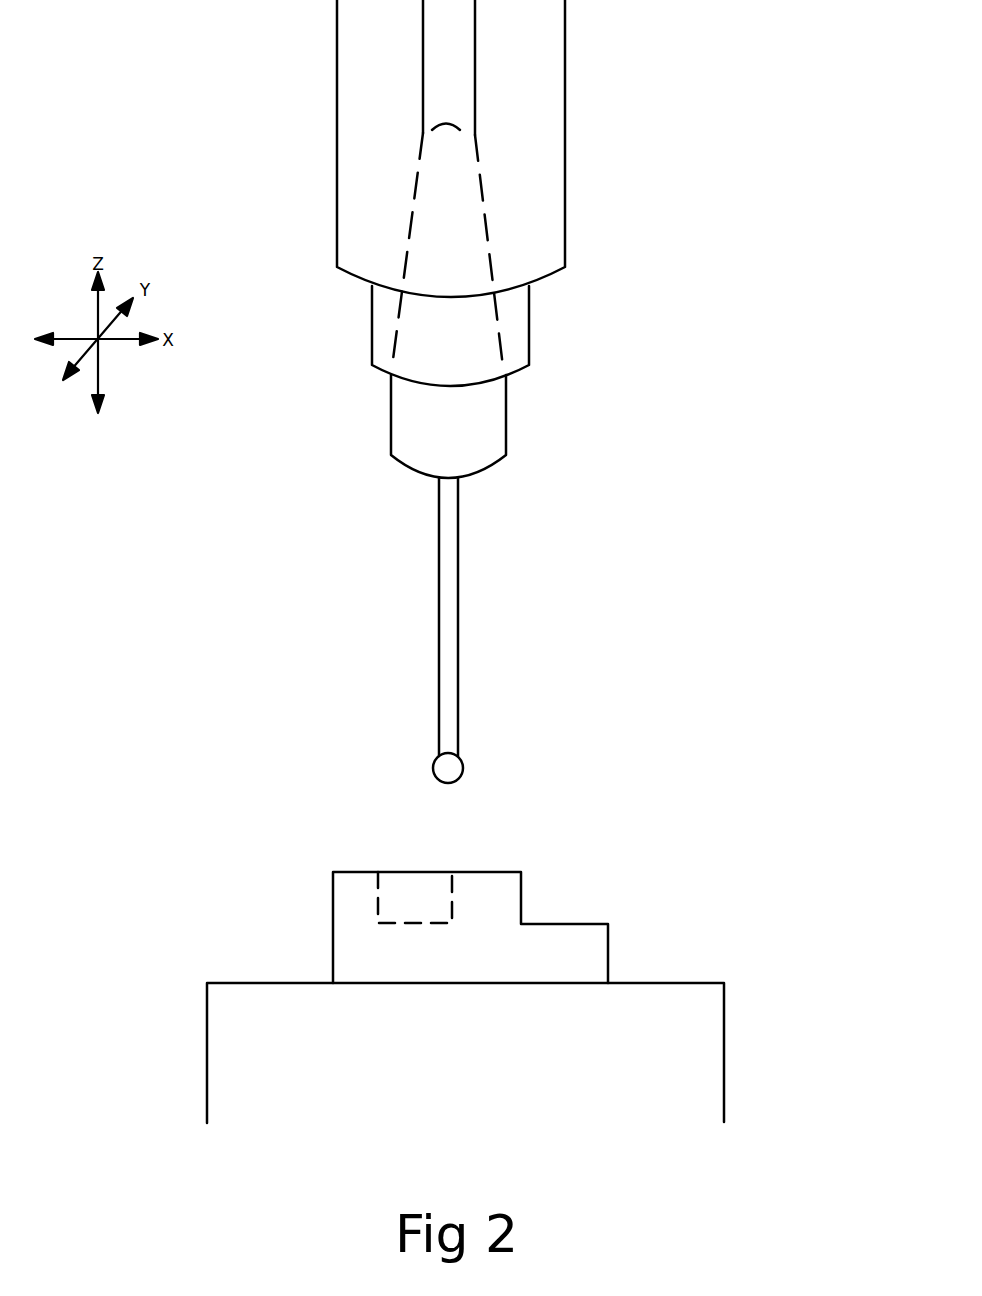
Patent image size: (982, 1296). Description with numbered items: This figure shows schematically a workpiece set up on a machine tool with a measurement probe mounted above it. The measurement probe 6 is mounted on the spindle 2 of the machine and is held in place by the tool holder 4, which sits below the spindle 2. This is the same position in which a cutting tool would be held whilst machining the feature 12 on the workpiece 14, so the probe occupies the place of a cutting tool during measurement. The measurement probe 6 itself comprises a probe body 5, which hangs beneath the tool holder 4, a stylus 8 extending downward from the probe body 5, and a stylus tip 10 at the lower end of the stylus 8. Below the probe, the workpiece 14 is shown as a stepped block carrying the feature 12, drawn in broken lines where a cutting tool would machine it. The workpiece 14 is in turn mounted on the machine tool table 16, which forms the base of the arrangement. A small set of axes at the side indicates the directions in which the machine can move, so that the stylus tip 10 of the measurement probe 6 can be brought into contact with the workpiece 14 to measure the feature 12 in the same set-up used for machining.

The spindle 2 is at (530, 129).
The tool holder 4 is at (512, 329).
The probe body 5 is at (486, 429).
The measurement probe 6 is at (458, 538).
The stylus 8 is at (458, 617).
The stylus tip 10 is at (448, 767).
The feature 12 is at (378, 898).
The workpiece 14 is at (597, 946).
The machine tool table 16 is at (687, 1060).